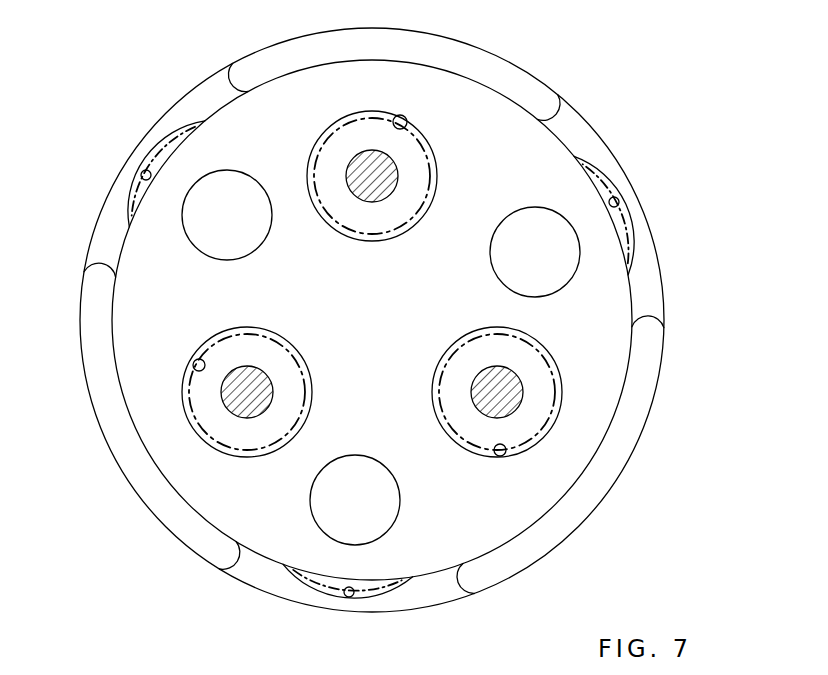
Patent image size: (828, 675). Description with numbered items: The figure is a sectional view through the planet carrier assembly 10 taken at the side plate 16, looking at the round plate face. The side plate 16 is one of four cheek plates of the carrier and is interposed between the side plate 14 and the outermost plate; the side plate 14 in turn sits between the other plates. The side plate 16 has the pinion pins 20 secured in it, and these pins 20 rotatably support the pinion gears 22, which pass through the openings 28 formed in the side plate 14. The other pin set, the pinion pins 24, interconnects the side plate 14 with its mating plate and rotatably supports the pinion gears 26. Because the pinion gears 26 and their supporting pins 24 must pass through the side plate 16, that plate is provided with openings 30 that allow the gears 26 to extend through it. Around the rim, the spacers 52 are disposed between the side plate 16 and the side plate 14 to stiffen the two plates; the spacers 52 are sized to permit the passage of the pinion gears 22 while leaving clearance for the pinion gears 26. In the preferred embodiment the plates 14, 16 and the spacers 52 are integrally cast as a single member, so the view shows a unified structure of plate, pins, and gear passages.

The planet carrier assembly 10 is at (595, 82).
The side plate 14 is at (658, 289).
The side plate 16 is at (622, 369).
The pinion pins 20 is at (208, 202).
The pinion gears 22 is at (177, 140).
The pinion pins 24 is at (392, 170).
The pinion gears 26 is at (333, 113).
The openings 28 is at (141, 175).
The openings 30 is at (399, 115).
The spacers 52 is at (500, 75).